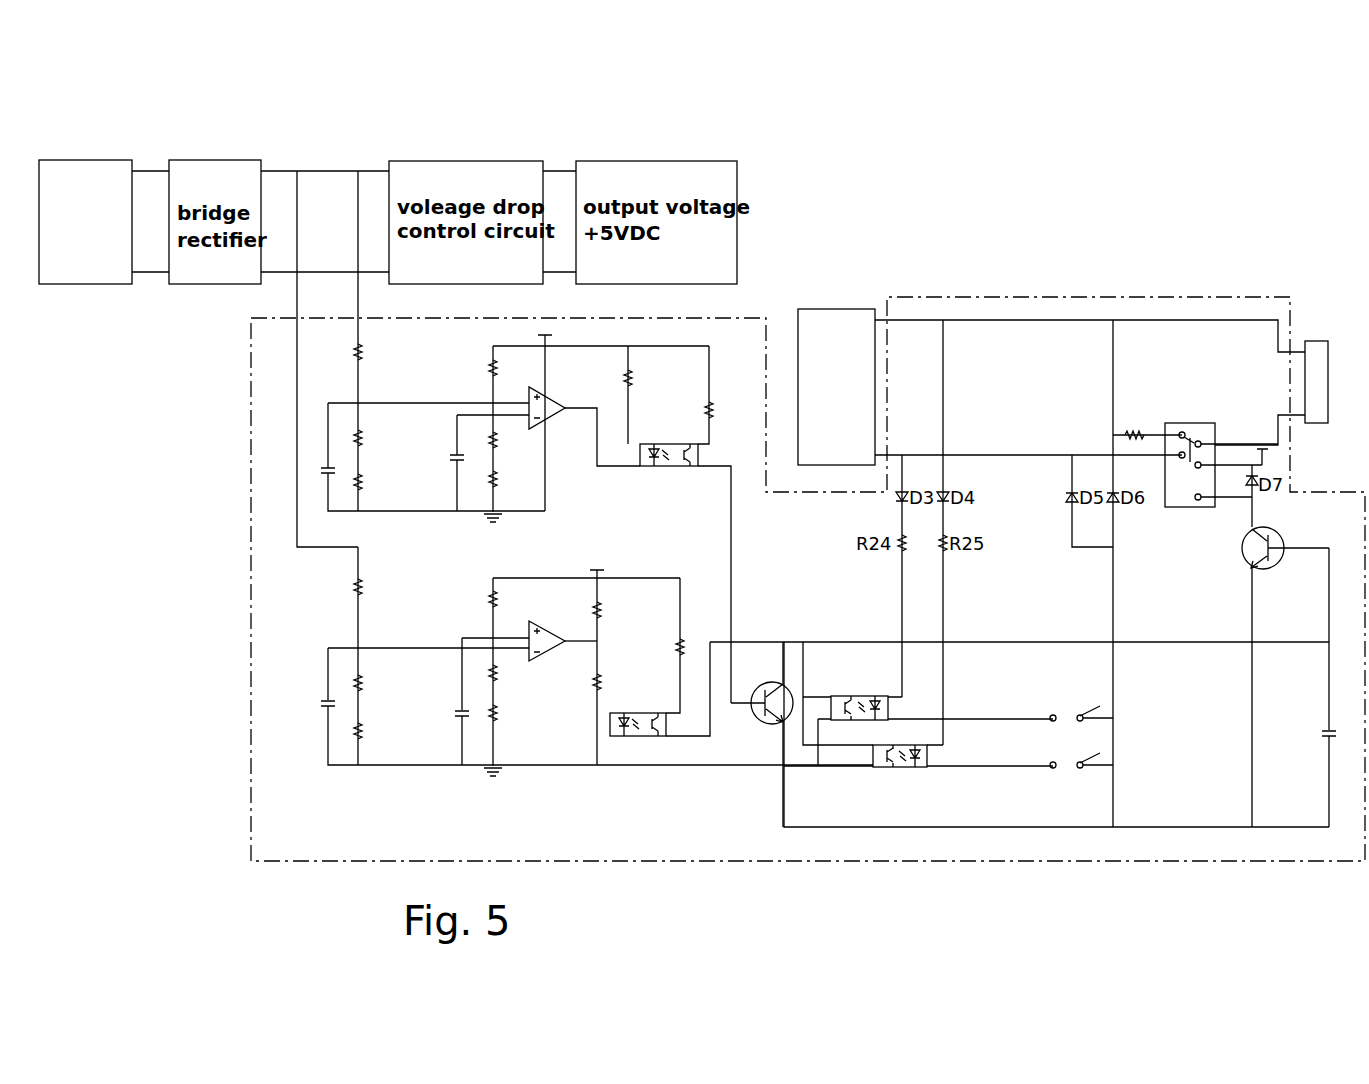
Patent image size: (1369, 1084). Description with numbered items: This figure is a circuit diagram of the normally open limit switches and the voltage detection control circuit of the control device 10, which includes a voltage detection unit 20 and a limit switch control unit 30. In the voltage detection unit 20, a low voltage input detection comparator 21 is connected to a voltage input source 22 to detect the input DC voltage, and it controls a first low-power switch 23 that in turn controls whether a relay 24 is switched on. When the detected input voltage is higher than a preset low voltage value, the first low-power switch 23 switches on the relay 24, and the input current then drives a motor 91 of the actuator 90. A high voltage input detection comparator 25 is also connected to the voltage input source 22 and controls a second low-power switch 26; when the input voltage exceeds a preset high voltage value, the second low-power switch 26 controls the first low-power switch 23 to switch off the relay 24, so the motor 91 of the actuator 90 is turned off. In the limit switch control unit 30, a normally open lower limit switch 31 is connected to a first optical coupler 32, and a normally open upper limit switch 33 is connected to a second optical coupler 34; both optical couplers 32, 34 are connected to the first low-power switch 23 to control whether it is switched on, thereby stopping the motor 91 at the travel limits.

The control device 10 is at (178, 887).
The voltage detection unit 20 is at (299, 594).
The low voltage input detection comparator 21 is at (550, 650).
The voltage input source 22 is at (75, 160).
The first low-power switch 23 is at (1277, 530).
The relay 24 is at (1197, 423).
The high voltage input detection comparator 25 is at (546, 413).
The second low-power switch 26 is at (765, 723).
The limit switch control unit 30 is at (1060, 792).
The normally open lower limit switch 31 is at (1087, 712).
The first optical coupler 32 is at (843, 720).
The normally open upper limit switch 33 is at (1088, 787).
The second optical coupler 34 is at (900, 768).
The actuator 90 is at (841, 287).
The motor 91 is at (1317, 341).